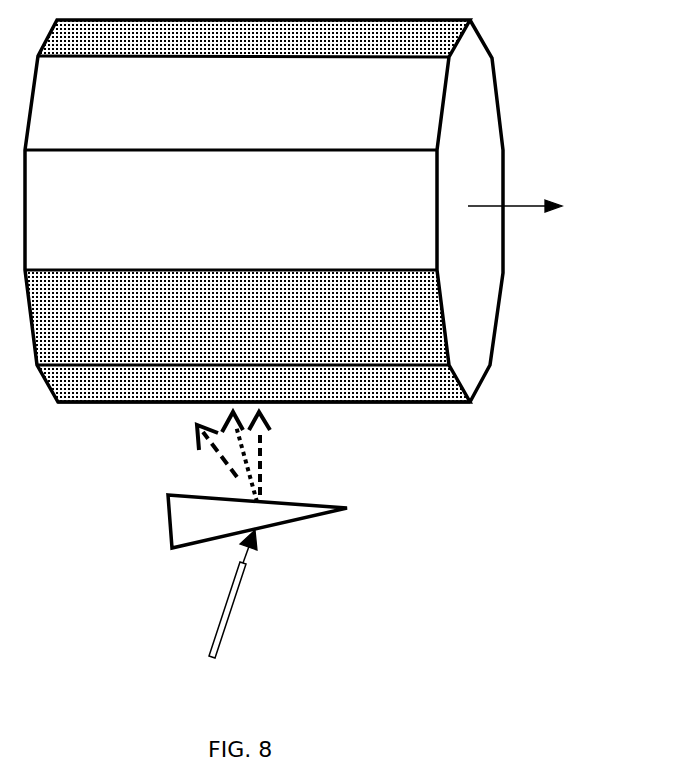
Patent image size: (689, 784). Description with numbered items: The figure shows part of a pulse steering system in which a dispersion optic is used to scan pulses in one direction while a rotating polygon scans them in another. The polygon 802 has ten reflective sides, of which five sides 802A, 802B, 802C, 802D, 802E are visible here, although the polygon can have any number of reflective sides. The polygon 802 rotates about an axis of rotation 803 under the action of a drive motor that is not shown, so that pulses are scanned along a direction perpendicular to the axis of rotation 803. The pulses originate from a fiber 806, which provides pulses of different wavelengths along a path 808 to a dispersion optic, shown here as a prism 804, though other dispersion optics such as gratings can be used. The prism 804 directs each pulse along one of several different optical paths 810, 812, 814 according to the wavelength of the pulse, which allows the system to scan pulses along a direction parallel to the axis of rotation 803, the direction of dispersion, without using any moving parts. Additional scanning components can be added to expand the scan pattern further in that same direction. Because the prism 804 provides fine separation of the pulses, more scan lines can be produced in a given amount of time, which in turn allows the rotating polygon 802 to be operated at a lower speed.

The polygon 802 is at (468, 126).
The reflective side 802A is at (382, 51).
The reflective side 802B is at (382, 107).
The reflective side 802C is at (382, 221).
The reflective side 802D is at (382, 315).
The reflective side 802E is at (382, 396).
The axis of rotation 803 is at (516, 227).
The prism 804 is at (185, 523).
The fiber 806 is at (212, 638).
The path 808 is at (317, 559).
The optical path 810 is at (235, 478).
The optical path 812 is at (228, 418).
The optical path 814 is at (337, 471).